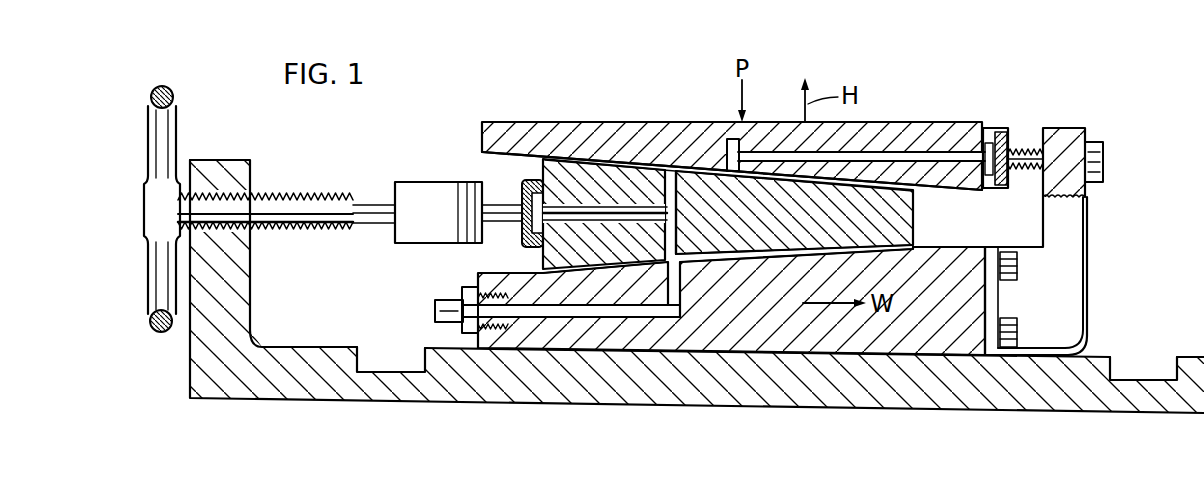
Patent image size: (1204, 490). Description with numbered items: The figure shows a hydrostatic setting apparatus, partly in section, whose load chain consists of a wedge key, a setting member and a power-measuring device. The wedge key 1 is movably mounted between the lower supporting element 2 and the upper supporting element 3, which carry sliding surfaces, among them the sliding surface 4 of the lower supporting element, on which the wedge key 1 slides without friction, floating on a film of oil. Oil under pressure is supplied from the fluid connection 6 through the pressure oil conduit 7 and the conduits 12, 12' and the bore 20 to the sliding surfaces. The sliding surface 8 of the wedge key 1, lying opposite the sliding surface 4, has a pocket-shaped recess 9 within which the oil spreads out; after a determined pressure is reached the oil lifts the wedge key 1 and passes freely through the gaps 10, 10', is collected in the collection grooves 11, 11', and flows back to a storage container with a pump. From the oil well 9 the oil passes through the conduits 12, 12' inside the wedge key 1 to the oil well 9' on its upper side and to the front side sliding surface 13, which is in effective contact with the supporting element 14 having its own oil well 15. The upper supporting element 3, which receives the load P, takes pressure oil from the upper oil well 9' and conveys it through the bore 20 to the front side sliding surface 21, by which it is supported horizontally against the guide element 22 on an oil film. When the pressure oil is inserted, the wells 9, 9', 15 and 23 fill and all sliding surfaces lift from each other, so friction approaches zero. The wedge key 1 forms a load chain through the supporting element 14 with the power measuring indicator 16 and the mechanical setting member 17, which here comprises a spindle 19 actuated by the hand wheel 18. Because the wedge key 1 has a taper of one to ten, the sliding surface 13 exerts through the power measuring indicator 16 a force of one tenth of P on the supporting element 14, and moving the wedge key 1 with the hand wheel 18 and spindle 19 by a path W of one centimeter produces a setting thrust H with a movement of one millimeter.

The wedge key 1 is at (748, 226).
The supporting element 2 is at (944, 306).
The upper supporting element 3 is at (634, 128).
The sliding surface 4 is at (958, 247).
The fluid connection 6 is at (452, 308).
The pressure oil conduit 7 is at (676, 300).
The sliding surface of the wedge key 8 is at (861, 247).
The pocket-shaped recess 9 is at (796, 284).
The oil well 9' is at (729, 193).
The gap 10 is at (575, 257).
The gap 10' is at (949, 231).
The collection groove 11 is at (391, 336).
The collection groove 11' is at (1143, 345).
The conduit 12 is at (695, 194).
The conduit 12' is at (604, 178).
The front side sliding surface 13 is at (537, 172).
The supporting element 14 is at (525, 188).
The oil well 15 is at (553, 228).
The power measuring indicator 16 is at (423, 222).
The mechanical setting member 17 is at (289, 195).
The hand wheel 18 is at (176, 92).
The spindle 19 is at (232, 231).
The bore 20 is at (928, 157).
The front side sliding surface 21 is at (981, 127).
The guide element 22 is at (1000, 130).
The pocket or well 23 is at (1009, 143).